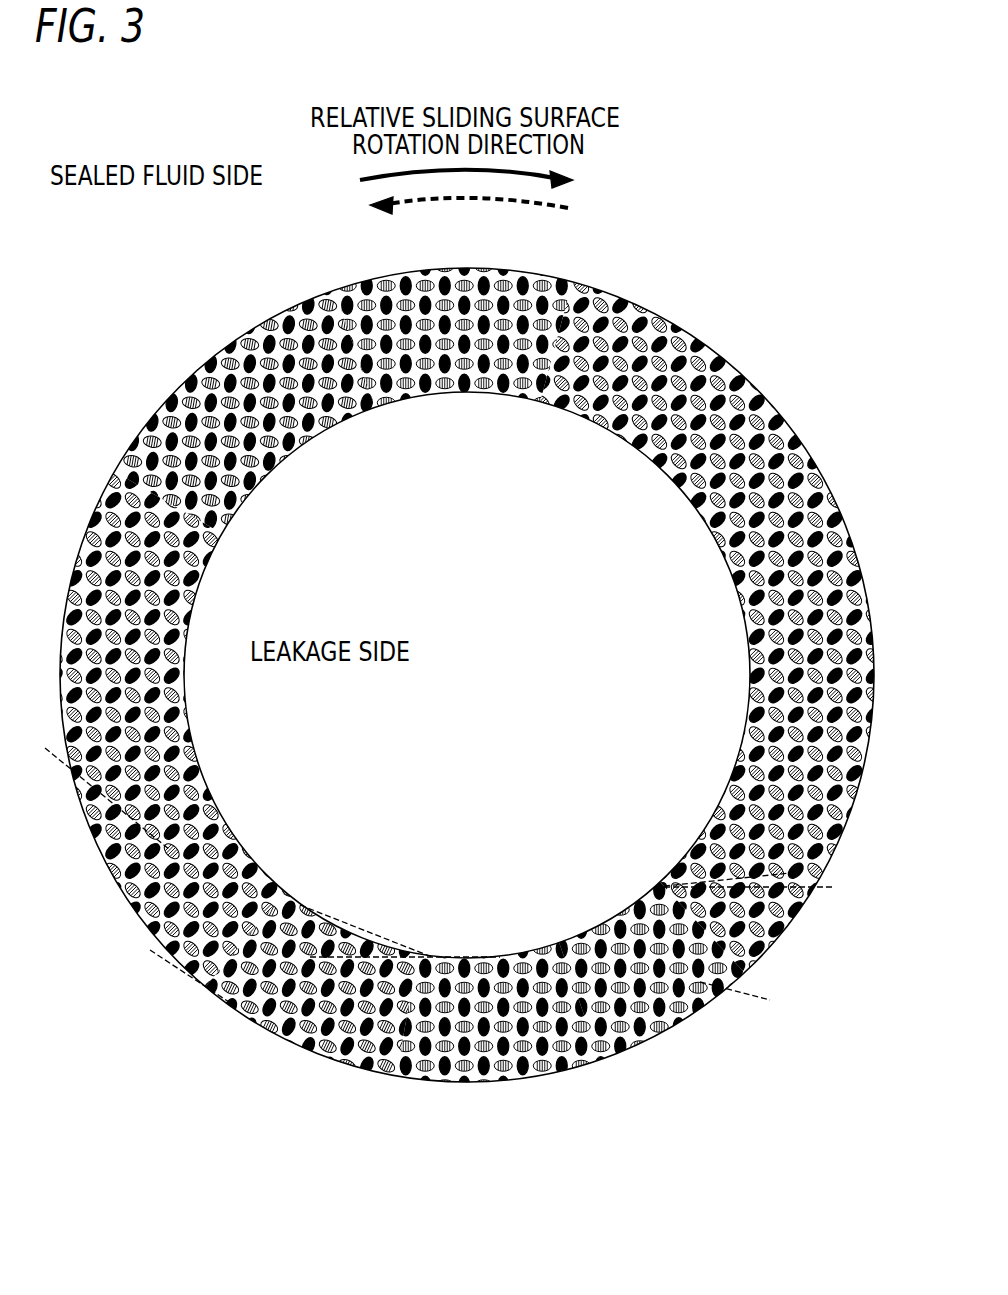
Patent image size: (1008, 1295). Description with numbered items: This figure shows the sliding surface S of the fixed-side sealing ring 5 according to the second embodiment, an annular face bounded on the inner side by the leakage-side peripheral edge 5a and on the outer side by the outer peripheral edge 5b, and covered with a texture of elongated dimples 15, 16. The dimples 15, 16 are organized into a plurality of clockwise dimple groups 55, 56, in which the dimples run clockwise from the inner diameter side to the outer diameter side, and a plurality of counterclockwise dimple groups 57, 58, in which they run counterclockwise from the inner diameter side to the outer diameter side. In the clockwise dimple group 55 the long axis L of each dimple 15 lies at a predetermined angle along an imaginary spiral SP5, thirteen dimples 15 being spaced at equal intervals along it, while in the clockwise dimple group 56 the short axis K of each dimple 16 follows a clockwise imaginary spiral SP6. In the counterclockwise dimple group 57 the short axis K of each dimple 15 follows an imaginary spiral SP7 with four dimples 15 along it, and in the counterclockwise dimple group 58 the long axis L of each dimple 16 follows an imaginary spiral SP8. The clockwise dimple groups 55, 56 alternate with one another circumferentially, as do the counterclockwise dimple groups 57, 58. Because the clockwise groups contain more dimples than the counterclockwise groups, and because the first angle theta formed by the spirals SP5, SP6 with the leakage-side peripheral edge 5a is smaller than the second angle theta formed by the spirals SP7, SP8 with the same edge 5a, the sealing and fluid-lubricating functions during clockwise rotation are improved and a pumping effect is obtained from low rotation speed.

The fixed-side sealing ring 5 is at (469, 687).
The leakage-side peripheral edge 5a is at (690, 500).
The outer peripheral edge / sealed fluid side of sliding surface 5b is at (812, 459).
The dimple 15 is at (58, 760).
The dimple 16 is at (213, 1002).
The clockwise dimple group 55 is at (287, 891).
The clockwise dimple group 56 is at (422, 950).
The counterclockwise dimple group 57 is at (560, 938).
The counterclockwise dimple group 58 is at (643, 868).
The imaginary spiral SP5 is at (239, 774).
The imaginary spiral SP6 is at (357, 686).
The imaginary spiral SP7 is at (533, 659).
The imaginary spiral SP8 is at (707, 615).